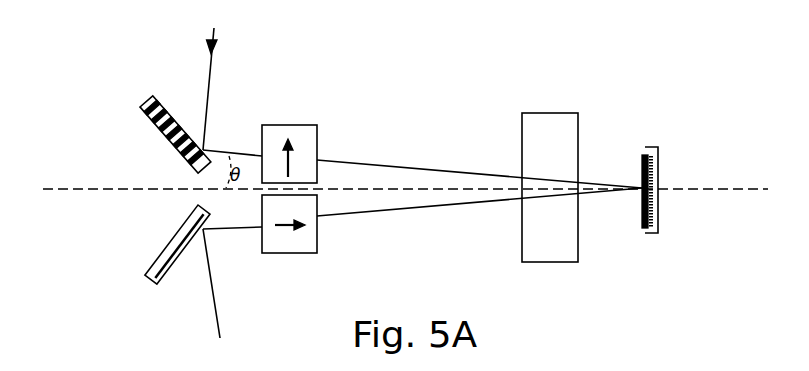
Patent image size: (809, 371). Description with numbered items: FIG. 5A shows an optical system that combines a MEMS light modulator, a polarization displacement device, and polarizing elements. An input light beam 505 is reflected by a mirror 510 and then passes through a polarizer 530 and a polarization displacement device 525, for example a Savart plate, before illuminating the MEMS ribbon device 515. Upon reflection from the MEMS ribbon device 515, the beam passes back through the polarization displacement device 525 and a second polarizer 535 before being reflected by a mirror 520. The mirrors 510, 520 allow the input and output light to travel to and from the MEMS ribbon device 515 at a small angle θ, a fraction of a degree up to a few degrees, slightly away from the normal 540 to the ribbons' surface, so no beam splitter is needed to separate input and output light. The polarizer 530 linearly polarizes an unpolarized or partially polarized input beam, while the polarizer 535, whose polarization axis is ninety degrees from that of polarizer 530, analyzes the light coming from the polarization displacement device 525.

The light beam 505 is at (213, 88).
The mirror 510 is at (142, 94).
The MEMS ribbon device 515 is at (665, 227).
The mirror 520 is at (145, 282).
The polarization displacement device 525 is at (573, 107).
The polarizer 530 is at (320, 132).
The polarizer 535 is at (320, 243).
The normal 540 is at (82, 193).